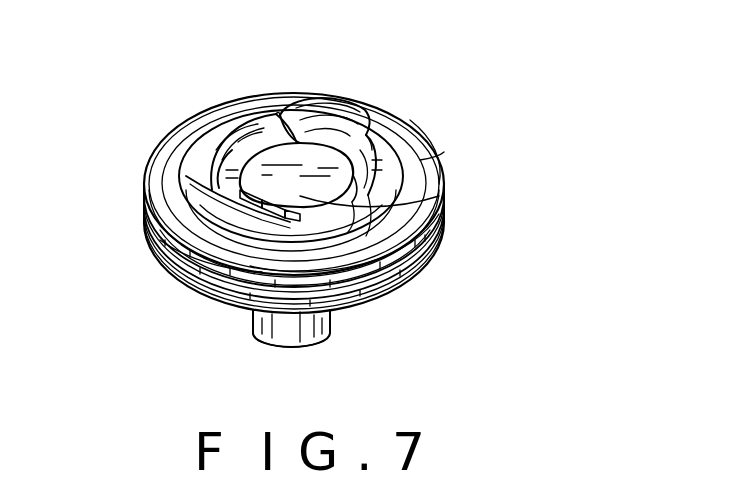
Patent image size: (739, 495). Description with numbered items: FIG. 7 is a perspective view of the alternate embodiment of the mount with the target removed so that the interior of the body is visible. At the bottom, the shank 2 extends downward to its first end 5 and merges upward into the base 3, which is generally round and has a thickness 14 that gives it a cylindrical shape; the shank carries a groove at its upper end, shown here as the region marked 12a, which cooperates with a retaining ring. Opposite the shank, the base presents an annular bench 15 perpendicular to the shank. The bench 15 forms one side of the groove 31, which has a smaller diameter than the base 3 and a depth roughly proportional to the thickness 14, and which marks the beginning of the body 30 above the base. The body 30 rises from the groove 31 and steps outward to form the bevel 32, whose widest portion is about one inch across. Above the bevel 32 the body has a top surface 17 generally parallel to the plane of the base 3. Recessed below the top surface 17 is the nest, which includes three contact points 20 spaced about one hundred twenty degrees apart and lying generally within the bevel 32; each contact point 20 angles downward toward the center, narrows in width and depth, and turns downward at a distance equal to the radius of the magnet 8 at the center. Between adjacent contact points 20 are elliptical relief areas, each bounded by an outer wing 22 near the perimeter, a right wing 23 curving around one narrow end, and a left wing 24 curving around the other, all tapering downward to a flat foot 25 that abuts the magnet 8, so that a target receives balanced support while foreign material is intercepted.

The shank 2 is at (315, 323).
The base 3 is at (215, 283).
The first end 5 is at (284, 348).
The magnet 8 is at (262, 140).
The lower flange 12a is at (244, 298).
The thickness 14 is at (408, 262).
The bench 15 is at (200, 292).
The top surface 17 is at (270, 125).
The contact points 20 is at (304, 118).
The outer wing 22 is at (248, 160).
The right wing 23 is at (232, 138).
The left wing 24 is at (320, 118).
The foot 25 is at (250, 195).
The body 30 is at (438, 215).
The groove 31 is at (412, 258).
The bevel 32 is at (425, 195).